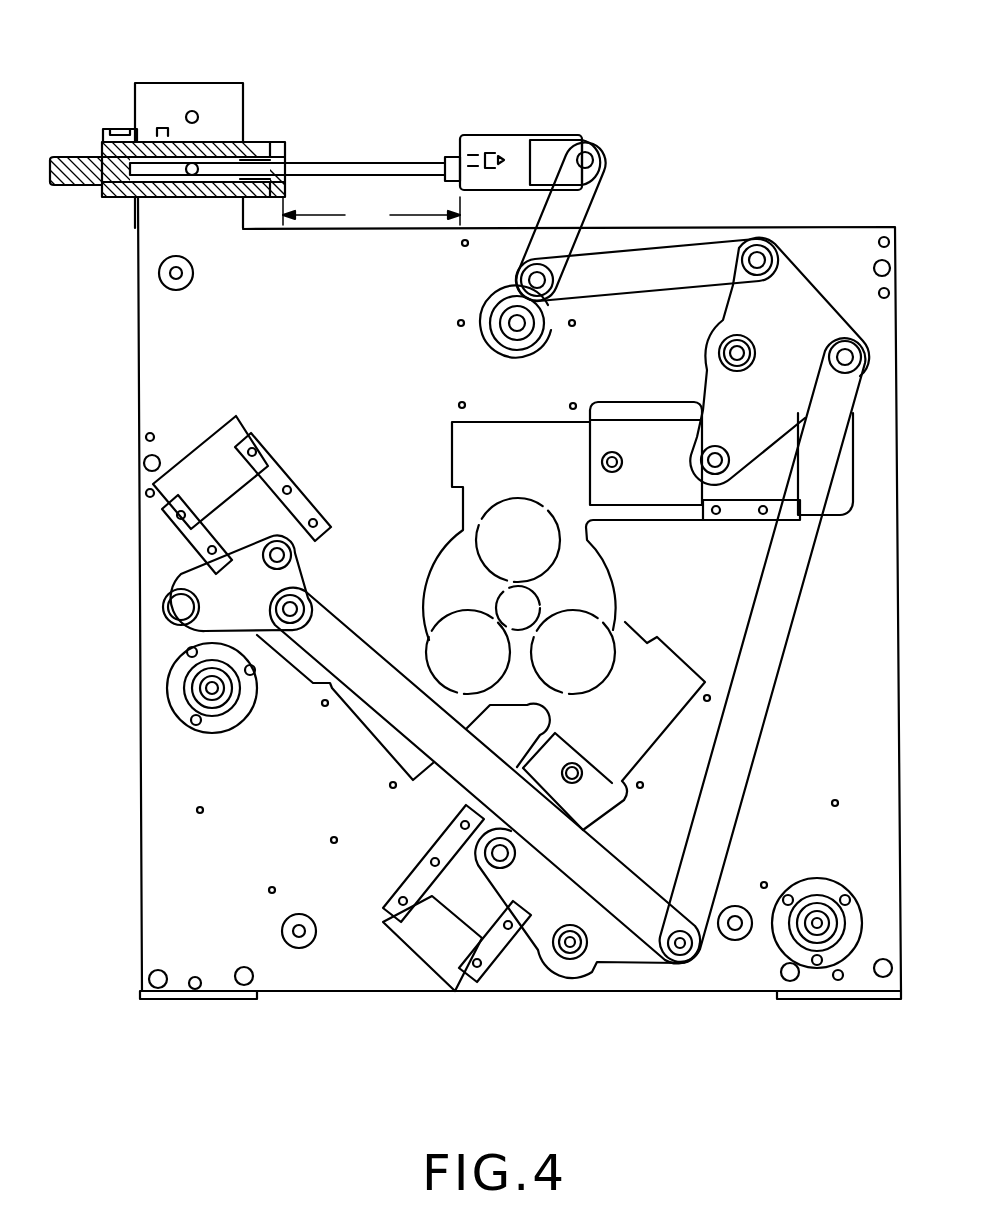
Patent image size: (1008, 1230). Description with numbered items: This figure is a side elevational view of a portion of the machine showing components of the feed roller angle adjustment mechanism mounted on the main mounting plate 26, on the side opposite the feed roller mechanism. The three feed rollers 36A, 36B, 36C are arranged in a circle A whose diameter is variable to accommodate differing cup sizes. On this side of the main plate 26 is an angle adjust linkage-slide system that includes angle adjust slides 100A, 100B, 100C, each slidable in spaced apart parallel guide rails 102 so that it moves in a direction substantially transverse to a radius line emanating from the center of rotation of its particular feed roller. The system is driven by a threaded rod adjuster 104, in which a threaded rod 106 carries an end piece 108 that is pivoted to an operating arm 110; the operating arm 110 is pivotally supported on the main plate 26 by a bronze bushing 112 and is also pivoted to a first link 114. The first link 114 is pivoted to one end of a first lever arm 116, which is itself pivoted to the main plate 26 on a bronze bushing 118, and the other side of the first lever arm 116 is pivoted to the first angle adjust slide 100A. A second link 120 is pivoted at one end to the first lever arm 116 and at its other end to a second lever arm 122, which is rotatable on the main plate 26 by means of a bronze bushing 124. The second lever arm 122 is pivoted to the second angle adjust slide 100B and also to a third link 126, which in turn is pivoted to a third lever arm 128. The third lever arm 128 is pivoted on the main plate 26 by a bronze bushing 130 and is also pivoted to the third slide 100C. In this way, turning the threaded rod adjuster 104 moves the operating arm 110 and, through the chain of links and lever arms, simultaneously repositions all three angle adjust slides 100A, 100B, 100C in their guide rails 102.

The main mounting plate 26 is at (136, 380).
The threaded rod adjuster 104 is at (272, 86).
The threaded rod 106 is at (318, 160).
The end piece 108 is at (520, 140).
The operating arm 110 is at (592, 198).
The bronze bushing 112 is at (486, 303).
The first link 114 is at (660, 255).
The first lever arm 116 is at (786, 282).
The bronze bushing 118 is at (697, 337).
The second link 120 is at (786, 640).
The second lever arm 122 is at (625, 952).
The bronze bushing 124 is at (572, 975).
The third link 126 is at (390, 720).
The third lever arm 128 is at (255, 622).
The bronze bushing 130 is at (155, 634).
The guide rails 102 is at (270, 452).
The first angle adjust slide 100A is at (647, 437).
The second angle adjust slide 100B is at (457, 900).
The third angle adjust slide 100C is at (278, 522).
The feed roller 36A is at (562, 548).
The feed roller 36B is at (612, 638).
The feed roller 36C is at (440, 617).
The circle A is at (545, 600).